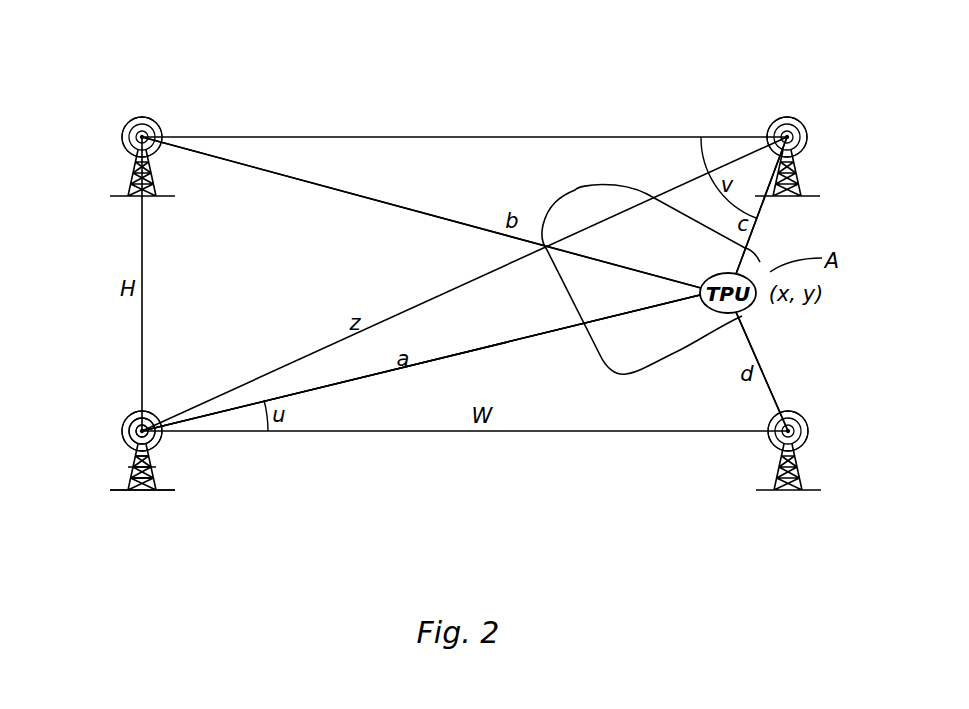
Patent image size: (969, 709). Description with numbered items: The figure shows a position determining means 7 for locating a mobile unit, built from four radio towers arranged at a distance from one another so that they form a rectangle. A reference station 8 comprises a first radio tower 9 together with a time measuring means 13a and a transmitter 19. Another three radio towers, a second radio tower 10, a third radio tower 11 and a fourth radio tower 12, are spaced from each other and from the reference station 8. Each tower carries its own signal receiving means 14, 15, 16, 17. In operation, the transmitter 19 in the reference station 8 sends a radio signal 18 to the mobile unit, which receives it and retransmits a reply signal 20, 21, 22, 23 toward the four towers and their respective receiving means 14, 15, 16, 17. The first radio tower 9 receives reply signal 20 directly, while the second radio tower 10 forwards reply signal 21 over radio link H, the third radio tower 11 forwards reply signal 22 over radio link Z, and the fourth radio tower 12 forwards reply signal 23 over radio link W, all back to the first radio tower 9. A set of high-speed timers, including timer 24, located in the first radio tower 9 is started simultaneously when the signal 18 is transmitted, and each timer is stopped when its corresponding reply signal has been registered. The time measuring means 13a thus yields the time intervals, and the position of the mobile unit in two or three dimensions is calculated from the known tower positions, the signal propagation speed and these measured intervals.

The position determining means 7 is at (600, 77).
The reference station 8 is at (120, 450).
The first radio tower 9 is at (137, 438).
The second radio tower 10 is at (120, 136).
The third radio tower 11 is at (807, 137).
The fourth radio tower 12 is at (810, 431).
The time measuring means 13a is at (145, 493).
The signal receiving means 14 is at (128, 413).
The signal receiving means 15 is at (138, 118).
The signal receiving means 16 is at (787, 118).
The signal receiving means 17 is at (800, 418).
The signal 18 is at (551, 356).
The transmitter 19 is at (153, 415).
The reply signal 20 is at (477, 339).
The reply signal 21 is at (601, 249).
The reply signal 22 is at (772, 224).
The reply signal 23 is at (765, 347).
The high-speed timer 24 is at (136, 526).